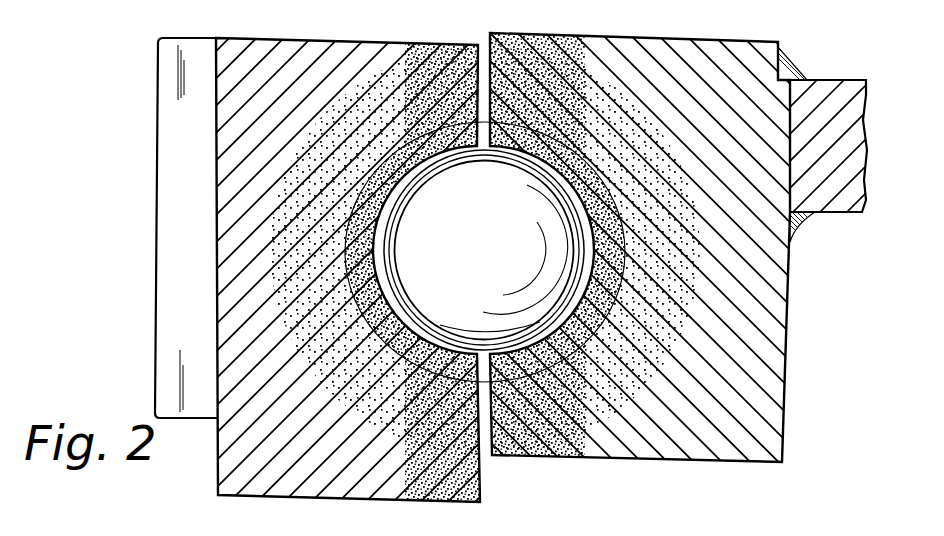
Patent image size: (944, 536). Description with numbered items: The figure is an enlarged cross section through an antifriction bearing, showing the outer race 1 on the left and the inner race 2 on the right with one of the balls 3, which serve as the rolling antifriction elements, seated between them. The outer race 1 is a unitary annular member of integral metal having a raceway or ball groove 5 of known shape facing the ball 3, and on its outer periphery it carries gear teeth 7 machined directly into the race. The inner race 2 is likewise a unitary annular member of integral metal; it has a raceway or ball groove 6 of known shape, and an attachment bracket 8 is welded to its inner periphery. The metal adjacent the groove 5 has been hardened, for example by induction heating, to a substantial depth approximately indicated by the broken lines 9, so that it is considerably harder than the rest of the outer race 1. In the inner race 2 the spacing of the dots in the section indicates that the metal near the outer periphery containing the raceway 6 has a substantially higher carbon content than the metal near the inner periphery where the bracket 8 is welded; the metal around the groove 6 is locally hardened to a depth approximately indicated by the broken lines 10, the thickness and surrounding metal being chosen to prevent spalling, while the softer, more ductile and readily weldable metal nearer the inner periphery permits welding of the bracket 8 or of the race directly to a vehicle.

The outer race 1 is at (281, 48).
The inner race 2 is at (733, 50).
The balls 3 is at (486, 269).
The raceway or ball groove 5 is at (408, 189).
The raceway or ball groove 6 is at (553, 187).
The gear teeth 7 is at (172, 157).
The attachment bracket 8 is at (840, 205).
The broken lines 9 is at (408, 143).
The broken lines 10 is at (562, 145).